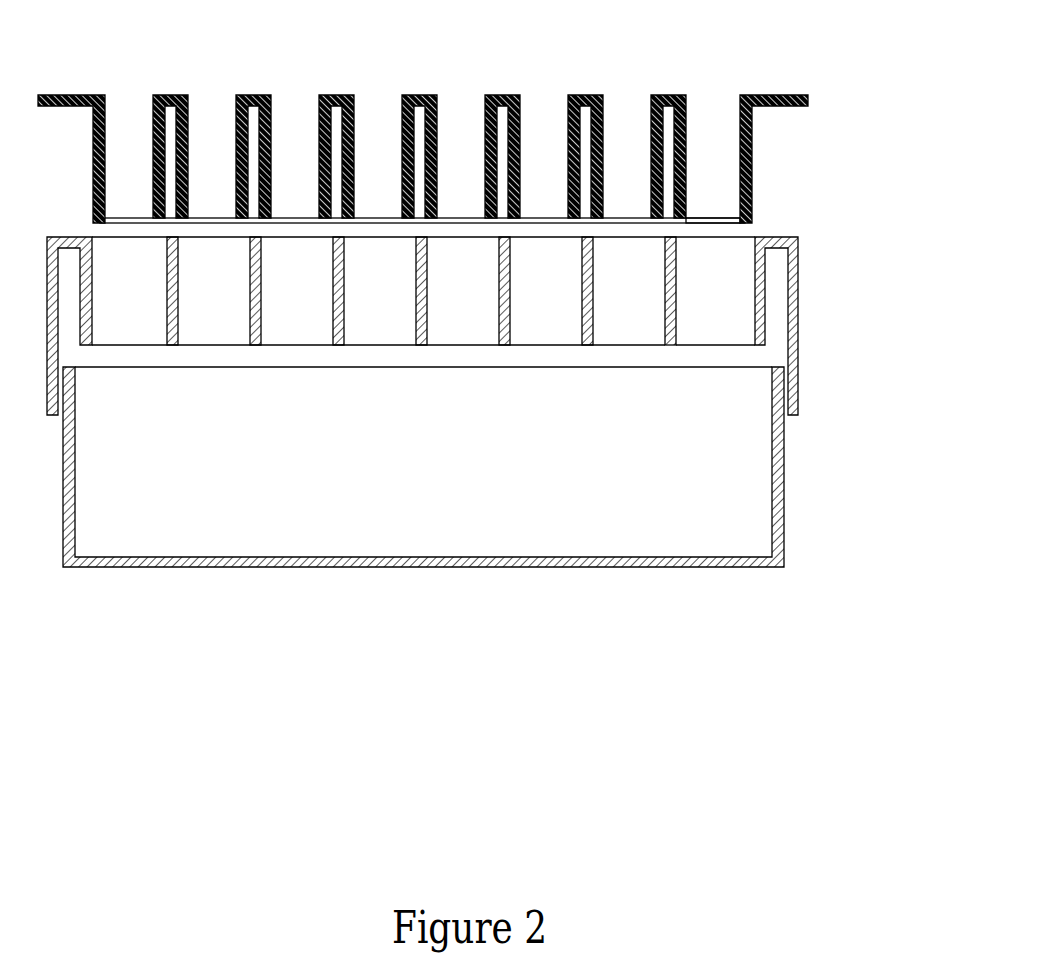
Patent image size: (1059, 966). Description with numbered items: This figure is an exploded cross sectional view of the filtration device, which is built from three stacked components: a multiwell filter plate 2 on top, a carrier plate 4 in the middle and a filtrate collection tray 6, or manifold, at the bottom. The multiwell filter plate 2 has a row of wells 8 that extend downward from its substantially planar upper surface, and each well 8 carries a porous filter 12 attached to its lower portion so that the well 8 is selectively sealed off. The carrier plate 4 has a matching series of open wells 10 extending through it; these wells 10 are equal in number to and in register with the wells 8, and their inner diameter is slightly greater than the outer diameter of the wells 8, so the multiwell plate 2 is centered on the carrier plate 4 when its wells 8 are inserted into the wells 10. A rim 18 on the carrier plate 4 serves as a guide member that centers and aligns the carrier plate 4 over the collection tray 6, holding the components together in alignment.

The multiwell filter plate 2 is at (469, 112).
The well 8 is at (705, 112).
The porous filter 12 is at (710, 218).
The carrier plate 4 is at (482, 281).
The open well 10 is at (735, 280).
The rim 18 is at (798, 333).
The filtrate collection tray 6 is at (772, 460).